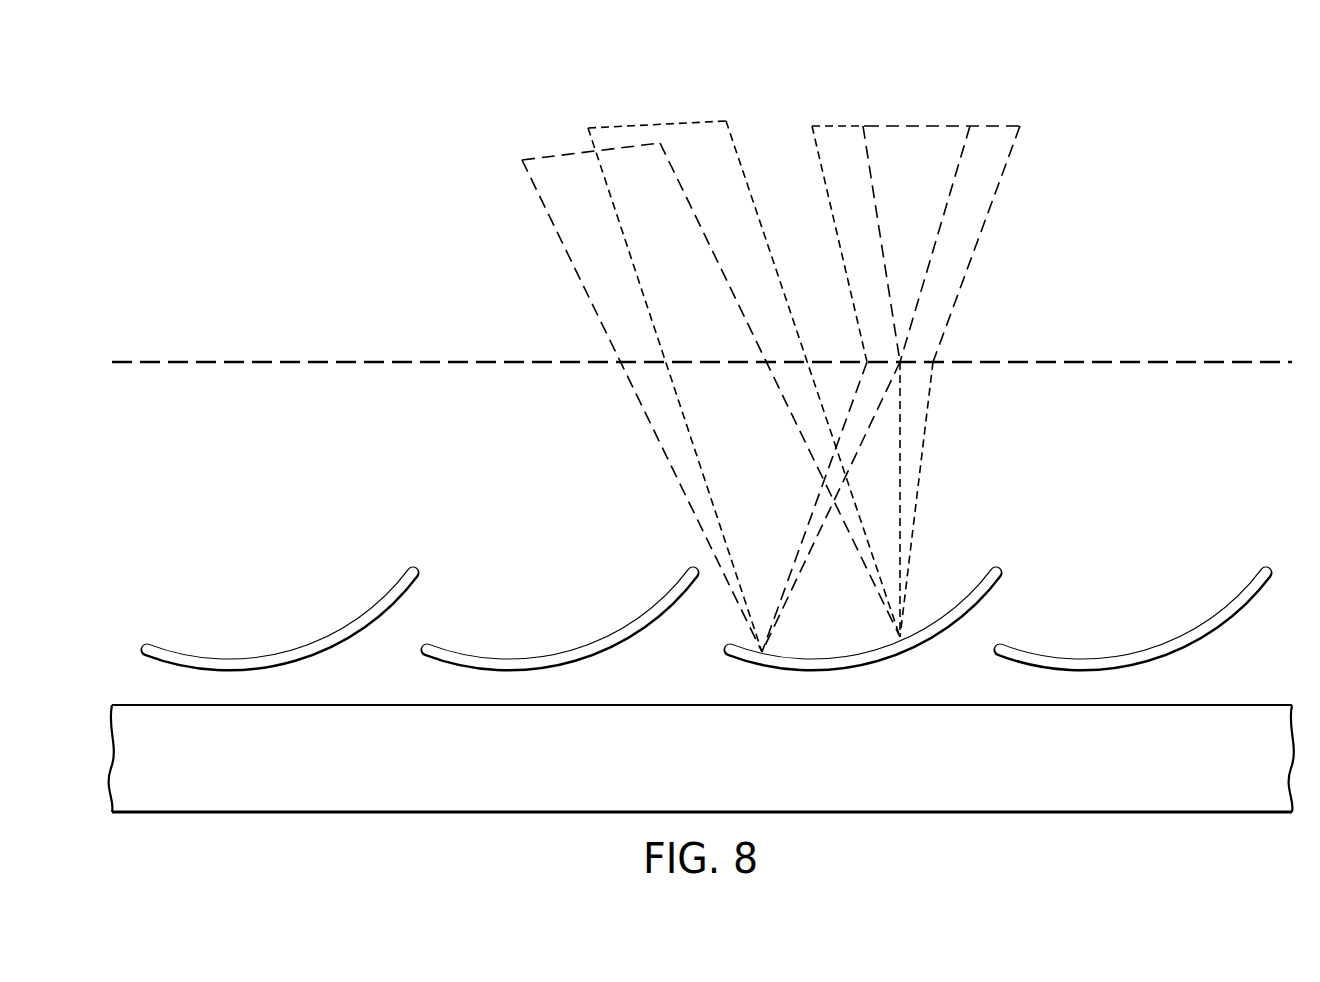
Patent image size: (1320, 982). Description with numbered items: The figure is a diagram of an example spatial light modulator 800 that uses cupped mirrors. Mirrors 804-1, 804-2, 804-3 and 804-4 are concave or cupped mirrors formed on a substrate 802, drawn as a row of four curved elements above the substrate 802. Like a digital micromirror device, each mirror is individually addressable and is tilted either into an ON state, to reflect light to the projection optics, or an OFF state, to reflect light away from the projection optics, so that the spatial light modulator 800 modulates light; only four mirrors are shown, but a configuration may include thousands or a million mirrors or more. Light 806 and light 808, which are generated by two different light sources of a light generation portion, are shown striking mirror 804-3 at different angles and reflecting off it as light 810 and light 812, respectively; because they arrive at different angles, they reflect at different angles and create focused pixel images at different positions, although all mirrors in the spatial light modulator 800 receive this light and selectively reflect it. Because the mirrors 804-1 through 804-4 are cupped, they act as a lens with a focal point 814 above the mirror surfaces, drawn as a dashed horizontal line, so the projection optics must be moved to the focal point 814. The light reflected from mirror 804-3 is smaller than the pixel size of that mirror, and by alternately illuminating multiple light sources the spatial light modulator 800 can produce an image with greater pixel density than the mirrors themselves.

The spatial light modulator 800 is at (327, 112).
The substrate 802 is at (396, 800).
The mirror 804-1 is at (290, 646).
The mirror 804-2 is at (570, 646).
The mirror 804-3 is at (855, 650).
The mirror 804-4 is at (1145, 648).
The light 806 is at (565, 157).
The light 808 is at (650, 124).
The light 810 is at (866, 120).
The light 812 is at (965, 94).
The focal point 814 is at (378, 360).